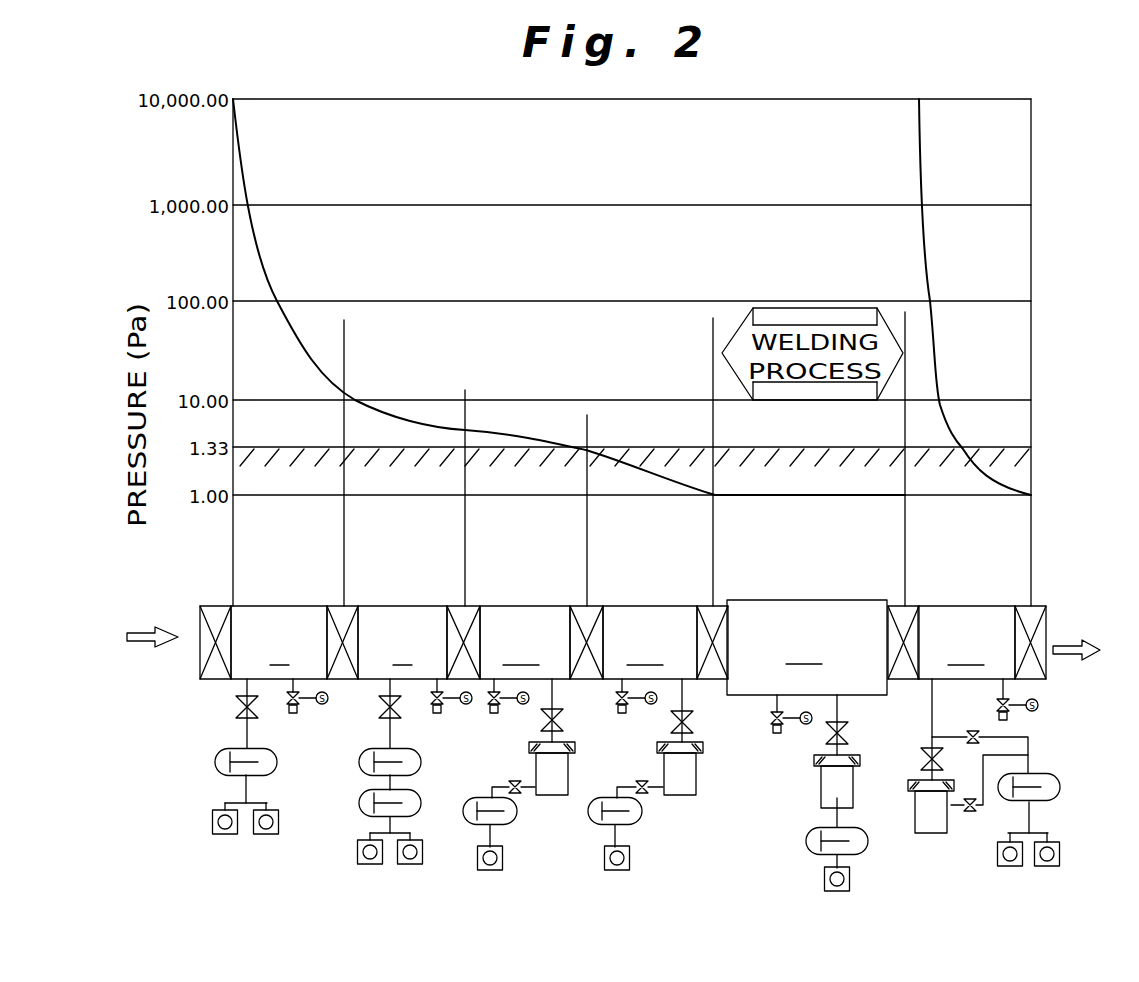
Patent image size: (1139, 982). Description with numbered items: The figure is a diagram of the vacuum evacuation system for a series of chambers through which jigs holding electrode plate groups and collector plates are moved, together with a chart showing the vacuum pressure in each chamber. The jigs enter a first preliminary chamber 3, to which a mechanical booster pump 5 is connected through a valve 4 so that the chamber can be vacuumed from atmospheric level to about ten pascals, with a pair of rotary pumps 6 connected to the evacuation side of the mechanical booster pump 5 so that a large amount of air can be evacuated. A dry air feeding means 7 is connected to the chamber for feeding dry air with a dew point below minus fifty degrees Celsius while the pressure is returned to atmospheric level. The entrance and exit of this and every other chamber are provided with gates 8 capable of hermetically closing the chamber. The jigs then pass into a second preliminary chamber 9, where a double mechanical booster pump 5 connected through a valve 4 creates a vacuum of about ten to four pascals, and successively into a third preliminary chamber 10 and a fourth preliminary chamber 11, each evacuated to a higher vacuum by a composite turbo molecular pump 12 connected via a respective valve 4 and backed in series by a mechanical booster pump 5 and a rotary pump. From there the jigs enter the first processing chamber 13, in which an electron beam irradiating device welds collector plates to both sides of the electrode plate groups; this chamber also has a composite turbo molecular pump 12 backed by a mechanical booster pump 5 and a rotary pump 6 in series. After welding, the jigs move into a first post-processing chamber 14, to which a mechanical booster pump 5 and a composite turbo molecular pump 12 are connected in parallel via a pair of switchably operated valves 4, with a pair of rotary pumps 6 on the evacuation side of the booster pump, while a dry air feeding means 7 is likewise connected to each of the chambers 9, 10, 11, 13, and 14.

The first preliminary chamber 3 is at (279, 642).
The valve 4 is at (236, 704).
The mechanical booster pump 5 is at (218, 760).
The rotary pump 6 is at (264, 835).
The dry air feeding means 7 is at (300, 714).
The gate 8 is at (215, 612).
The second preliminary chamber 9 is at (402, 642).
The third preliminary chamber 10 is at (525, 642).
The fourth preliminary chamber 11 is at (650, 642).
The composite turbo molecular pump 12 is at (553, 786).
The first processing chamber 13 is at (807, 647).
The first post-processing chamber 14 is at (966, 642).